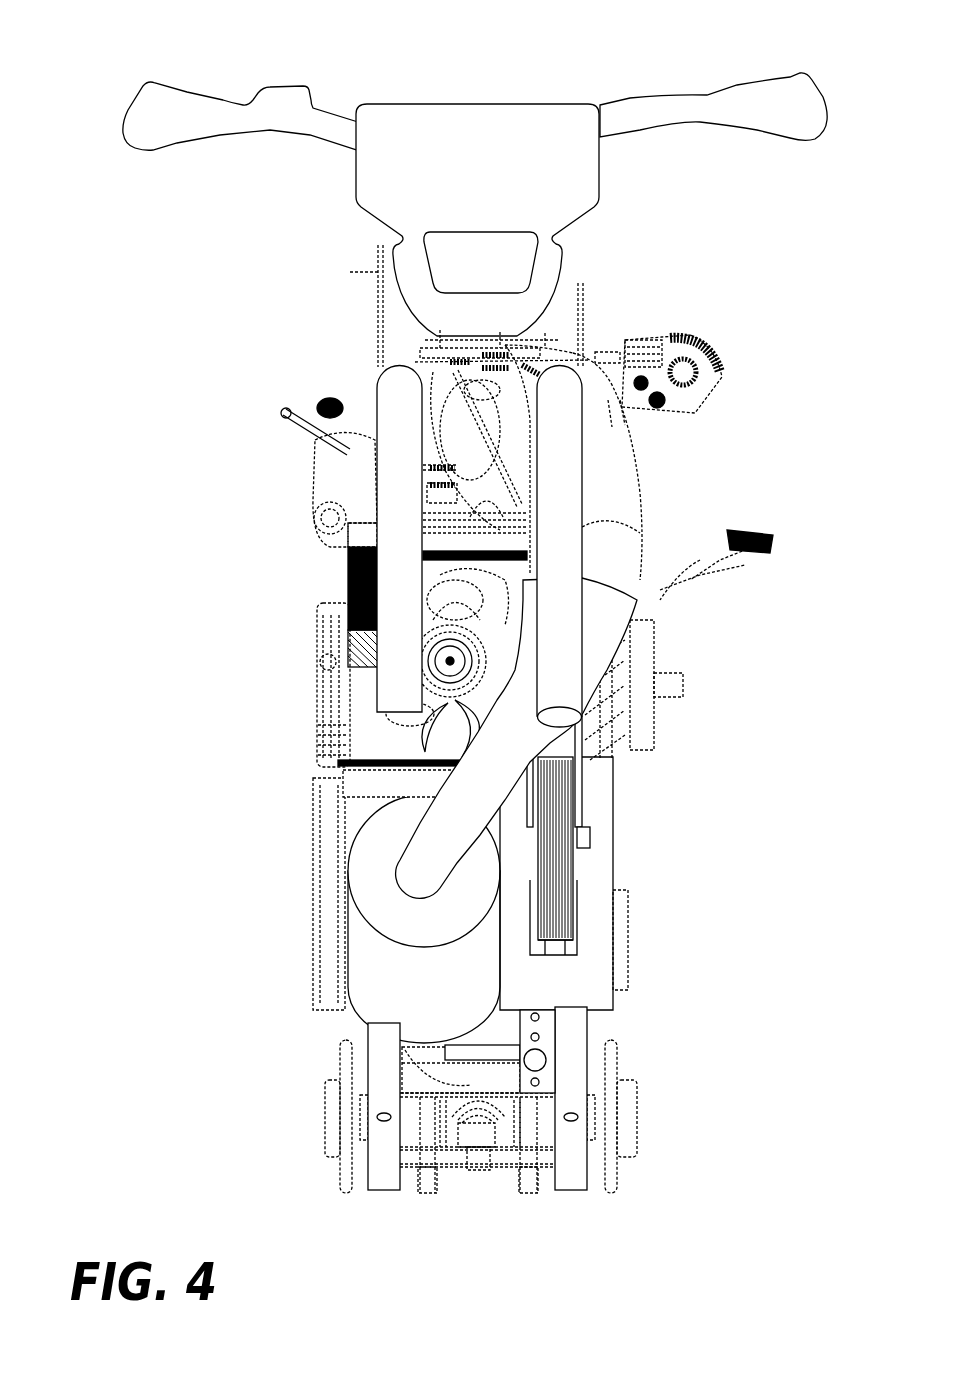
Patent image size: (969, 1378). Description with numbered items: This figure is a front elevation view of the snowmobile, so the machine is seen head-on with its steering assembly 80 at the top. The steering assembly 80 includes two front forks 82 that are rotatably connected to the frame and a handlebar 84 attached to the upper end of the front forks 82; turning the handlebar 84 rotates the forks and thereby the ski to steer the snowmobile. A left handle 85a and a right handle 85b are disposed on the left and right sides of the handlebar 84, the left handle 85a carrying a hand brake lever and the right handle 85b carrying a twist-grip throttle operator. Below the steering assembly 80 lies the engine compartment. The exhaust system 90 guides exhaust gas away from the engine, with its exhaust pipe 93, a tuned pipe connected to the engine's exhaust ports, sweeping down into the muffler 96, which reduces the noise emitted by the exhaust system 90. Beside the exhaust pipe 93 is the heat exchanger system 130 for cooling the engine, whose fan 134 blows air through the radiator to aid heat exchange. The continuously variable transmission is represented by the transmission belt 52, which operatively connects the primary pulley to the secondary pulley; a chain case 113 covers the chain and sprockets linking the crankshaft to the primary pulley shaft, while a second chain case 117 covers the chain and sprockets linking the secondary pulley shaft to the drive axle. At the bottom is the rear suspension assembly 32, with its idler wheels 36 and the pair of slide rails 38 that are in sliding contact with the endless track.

The steering assembly 80 is at (475, 192).
The handlebar 84 is at (354, 115).
The left handle 85a is at (712, 93).
The right handle 85b is at (187, 92).
The front forks 82 is at (378, 268).
The exhaust system 90 is at (594, 621).
The exhaust pipe 93 is at (635, 493).
The fan 134 is at (433, 627).
The heat exchanger system 130 is at (430, 694).
The chain case 113 is at (655, 737).
The chain case 117 is at (328, 870).
The transmission belt 52 is at (567, 883).
The muffler 96 is at (373, 998).
The rear suspension assembly 32 is at (521, 1134).
The idler wheels 36 is at (345, 1190).
The slide rails 38 is at (382, 1190).